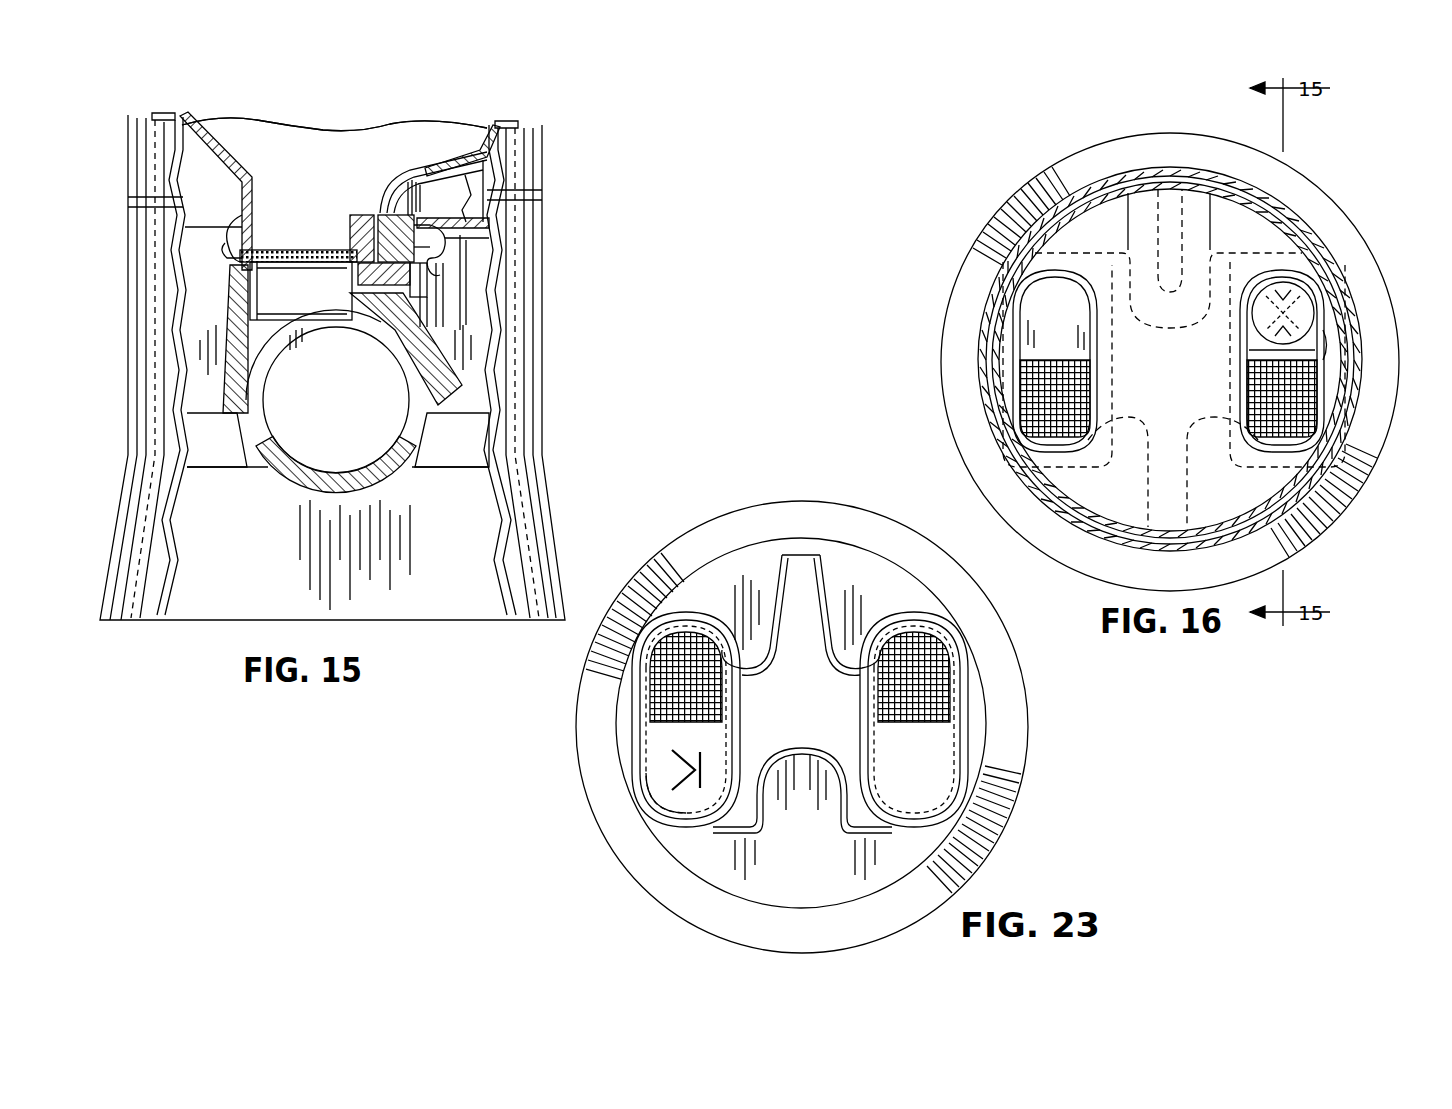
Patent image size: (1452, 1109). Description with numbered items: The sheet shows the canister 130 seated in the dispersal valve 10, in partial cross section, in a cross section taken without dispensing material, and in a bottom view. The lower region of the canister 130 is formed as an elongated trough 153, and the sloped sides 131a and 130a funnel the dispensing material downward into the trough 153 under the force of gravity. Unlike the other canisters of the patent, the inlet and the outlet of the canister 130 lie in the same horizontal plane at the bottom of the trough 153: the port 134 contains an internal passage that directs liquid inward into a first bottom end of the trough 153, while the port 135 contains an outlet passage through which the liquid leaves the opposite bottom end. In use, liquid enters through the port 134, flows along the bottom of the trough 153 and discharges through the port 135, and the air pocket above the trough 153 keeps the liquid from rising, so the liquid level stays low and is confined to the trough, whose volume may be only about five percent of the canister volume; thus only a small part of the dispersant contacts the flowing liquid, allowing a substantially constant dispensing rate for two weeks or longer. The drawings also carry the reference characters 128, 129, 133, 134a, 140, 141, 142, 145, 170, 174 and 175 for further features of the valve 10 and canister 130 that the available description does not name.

In FIG. 15, the dispersal valve 10 is at (527, 424).
In FIG. 16, the dispersal valve 10 is at (1335, 195).
In FIG. 23, the dispersal valve 10 is at (802, 727).
In FIG. 15, the bore 128 is at (397, 313).
In FIG. 15, the sleeve wall 129 is at (383, 313).
In FIG. 15, the canister 130 is at (318, 130).
In FIG. 15, the side 130a is at (453, 160).
In FIG. 15, the side 131a is at (218, 160).
In FIG. 16, the annular wall 133 is at (1340, 505).
In FIG. 23, the annular wall 133 is at (680, 552).
In FIG. 15, the port 134 is at (440, 290).
In FIG. 16, the port 134 is at (1323, 330).
In FIG. 23, the port 134 is at (642, 752).
In FIG. 15, the clip hook 134a is at (223, 256).
In FIG. 16, the port 135 is at (1022, 318).
In FIG. 23, the port 135 is at (972, 758).
In FIG. 15, the support leg 140 is at (233, 313).
In FIG. 15, the sealing gasket 141 is at (270, 250).
In FIG. 16, the sealing gasket 141 is at (1322, 425).
In FIG. 23, the sealing gasket 141 is at (642, 705).
In FIG. 15, the pocket 142 is at (372, 214).
In FIG. 16, the pocket 142 is at (1305, 300).
In FIG. 23, the pocket 142 is at (663, 798).
In FIG. 16, the mesh insert 145 is at (1033, 393).
In FIG. 23, the mesh insert 145 is at (975, 690).
In FIG. 15, the trough 153 is at (332, 225).
In FIG. 15, the plug 170 is at (360, 266).
In FIG. 15, the collar 174 is at (381, 213).
In FIG. 15, the arm 175 is at (385, 213).
In FIG. 23, the arm 175 is at (668, 760).